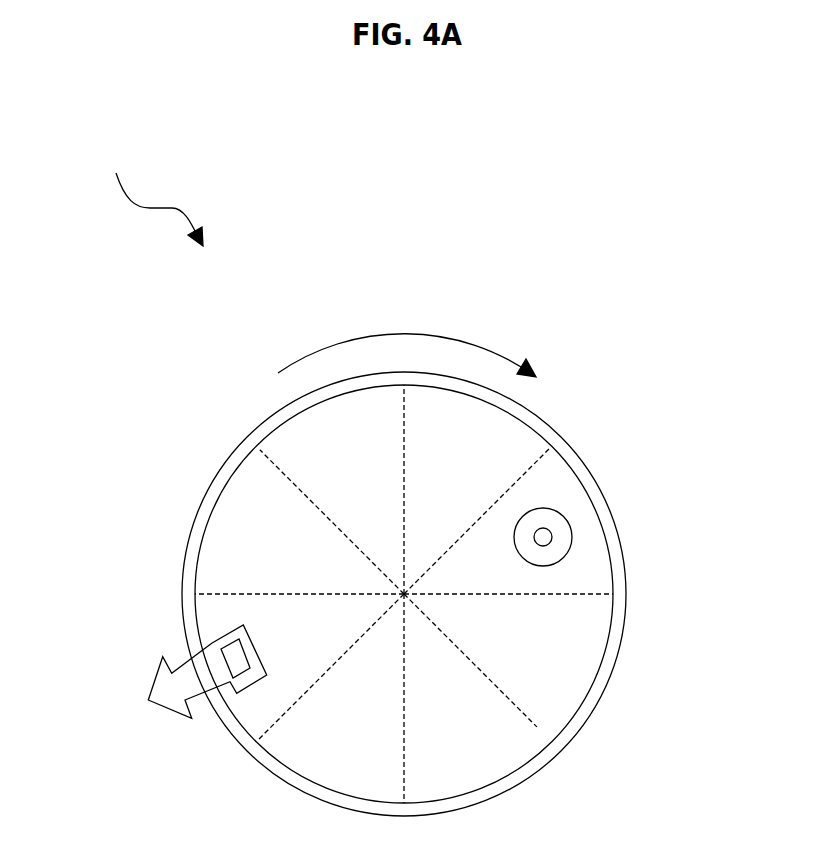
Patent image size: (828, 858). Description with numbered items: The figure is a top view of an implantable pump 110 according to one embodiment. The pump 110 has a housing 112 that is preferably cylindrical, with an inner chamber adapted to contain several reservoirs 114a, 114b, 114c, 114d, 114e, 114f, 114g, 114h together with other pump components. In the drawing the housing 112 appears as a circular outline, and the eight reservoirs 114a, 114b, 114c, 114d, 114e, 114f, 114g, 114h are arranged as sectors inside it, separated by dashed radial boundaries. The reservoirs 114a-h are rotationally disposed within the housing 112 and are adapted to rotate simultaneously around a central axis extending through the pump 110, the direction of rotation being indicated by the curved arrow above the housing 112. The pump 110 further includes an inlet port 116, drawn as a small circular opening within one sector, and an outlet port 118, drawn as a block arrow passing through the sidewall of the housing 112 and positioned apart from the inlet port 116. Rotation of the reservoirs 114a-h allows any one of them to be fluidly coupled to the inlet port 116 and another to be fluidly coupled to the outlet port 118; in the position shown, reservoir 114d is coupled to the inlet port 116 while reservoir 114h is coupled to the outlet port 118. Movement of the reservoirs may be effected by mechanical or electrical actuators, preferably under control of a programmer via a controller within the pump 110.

The implantable pump 110 is at (150, 194).
The housing 112 is at (188, 538).
The reservoir 114a is at (306, 555).
The reservoir 114b is at (382, 463).
The reservoir 114c is at (491, 481).
The reservoir 114d is at (511, 581).
The reservoir 114e is at (564, 651).
The reservoir 114f is at (491, 741).
The reservoir 114g is at (373, 741).
The reservoir 114h is at (319, 648).
The inlet port 116 is at (552, 537).
The outlet port 118 is at (218, 652).